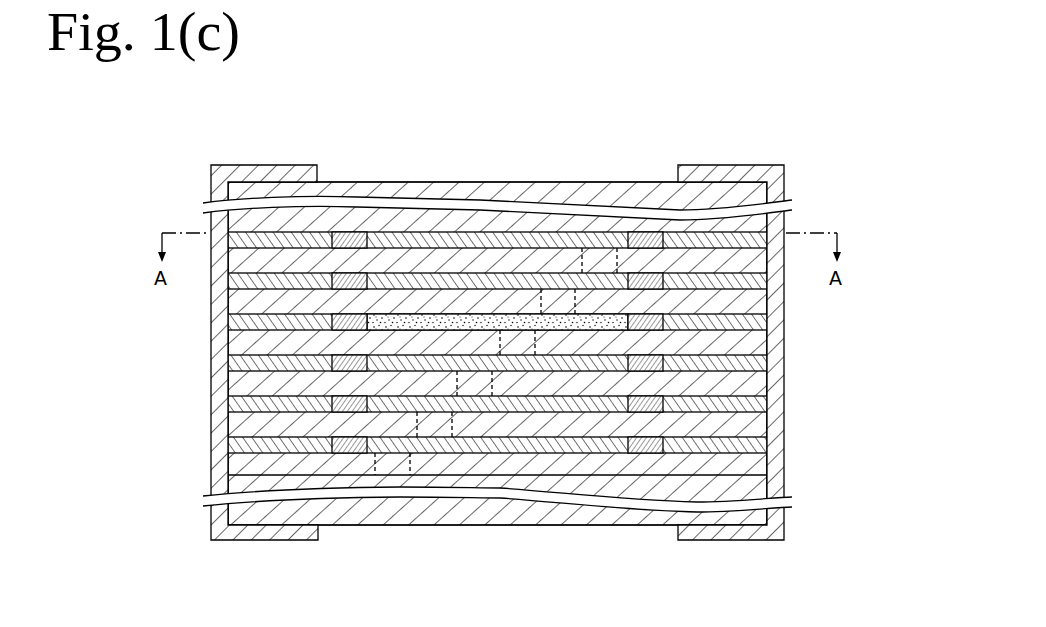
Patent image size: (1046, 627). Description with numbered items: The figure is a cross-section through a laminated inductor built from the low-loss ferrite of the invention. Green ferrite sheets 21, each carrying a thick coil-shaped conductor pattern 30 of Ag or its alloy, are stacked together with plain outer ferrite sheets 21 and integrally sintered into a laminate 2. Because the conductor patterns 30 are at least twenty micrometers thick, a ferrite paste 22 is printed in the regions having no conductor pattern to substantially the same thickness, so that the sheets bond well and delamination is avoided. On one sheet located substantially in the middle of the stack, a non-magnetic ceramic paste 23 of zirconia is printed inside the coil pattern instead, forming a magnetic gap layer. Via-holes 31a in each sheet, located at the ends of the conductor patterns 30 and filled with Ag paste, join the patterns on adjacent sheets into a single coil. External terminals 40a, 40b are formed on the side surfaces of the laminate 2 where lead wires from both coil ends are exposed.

The laminate 2 is at (499, 314).
The green ferrite sheet 21 is at (468, 193).
The ferrite paste 22 is at (410, 238).
The non-magnetic ceramic paste 23 is at (518, 318).
The coil-shaped conductor pattern 30 is at (345, 238).
The via-hole 31a is at (595, 250).
The external terminal 40a is at (778, 370).
The external terminal 40b is at (213, 376).